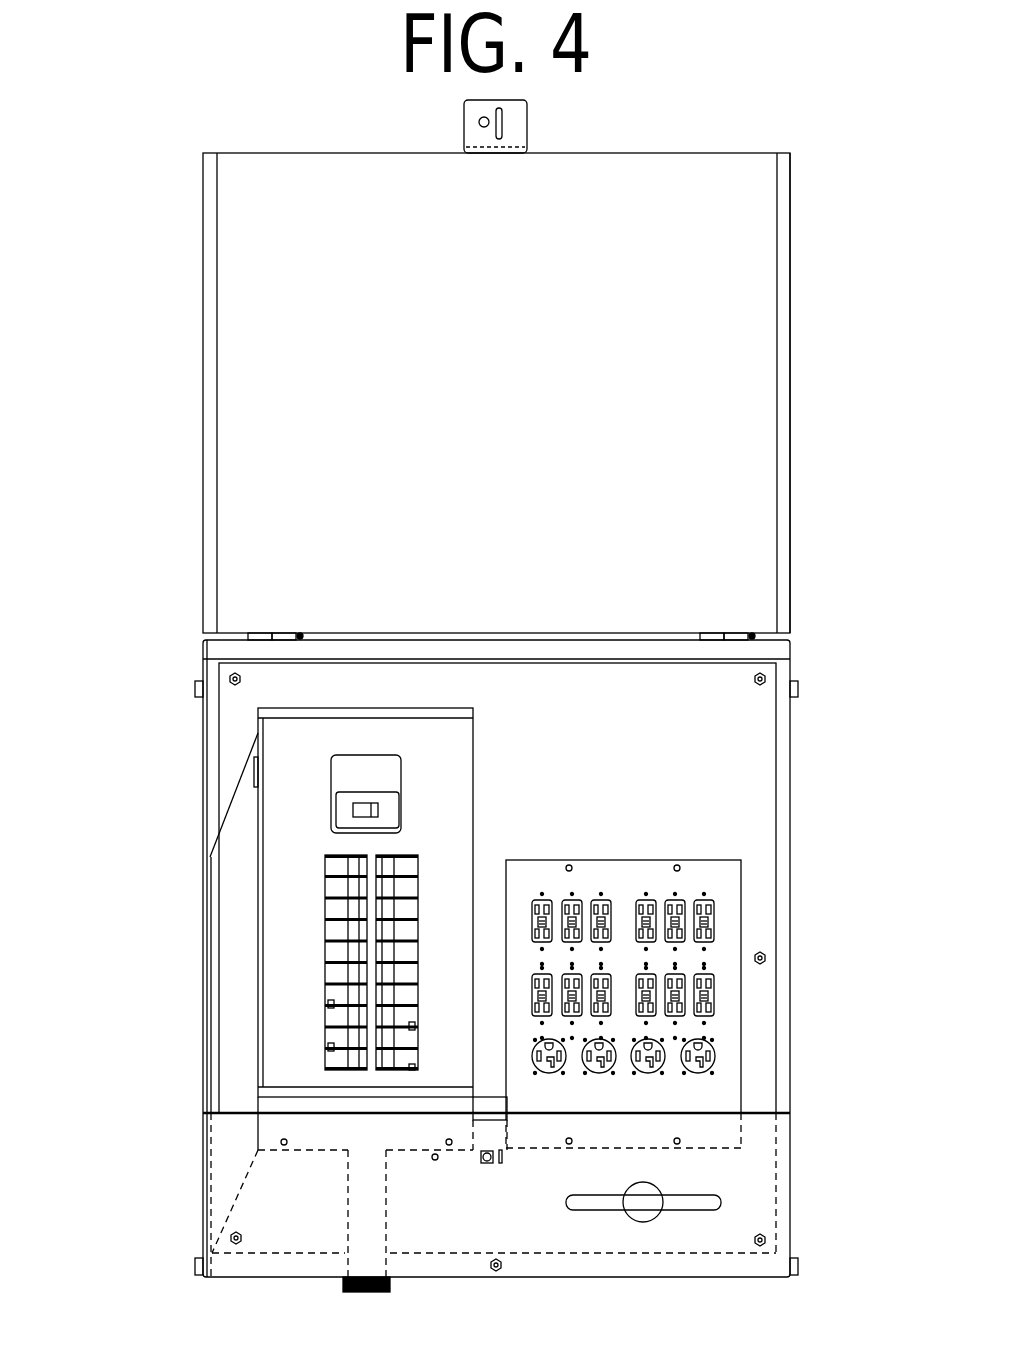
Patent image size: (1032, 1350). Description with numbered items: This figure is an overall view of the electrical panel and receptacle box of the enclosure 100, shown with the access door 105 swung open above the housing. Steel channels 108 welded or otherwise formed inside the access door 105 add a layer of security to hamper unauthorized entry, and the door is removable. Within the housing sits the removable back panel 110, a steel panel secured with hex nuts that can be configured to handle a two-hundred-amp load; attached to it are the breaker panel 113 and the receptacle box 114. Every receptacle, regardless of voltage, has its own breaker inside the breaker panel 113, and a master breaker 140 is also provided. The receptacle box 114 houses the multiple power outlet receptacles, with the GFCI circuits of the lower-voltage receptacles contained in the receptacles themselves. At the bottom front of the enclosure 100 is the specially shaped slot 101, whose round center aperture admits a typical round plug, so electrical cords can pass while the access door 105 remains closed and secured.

The enclosure 100 is at (183, 780).
The slot 101 is at (643, 1198).
The access door 105 is at (303, 372).
The steel channels 108 is at (783, 363).
The removable back panel 110 is at (720, 773).
The breaker panel 113 is at (391, 750).
The receptacle box 114 is at (646, 888).
The master breaker 140 is at (368, 805).